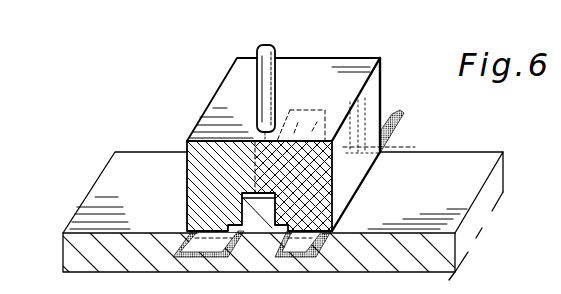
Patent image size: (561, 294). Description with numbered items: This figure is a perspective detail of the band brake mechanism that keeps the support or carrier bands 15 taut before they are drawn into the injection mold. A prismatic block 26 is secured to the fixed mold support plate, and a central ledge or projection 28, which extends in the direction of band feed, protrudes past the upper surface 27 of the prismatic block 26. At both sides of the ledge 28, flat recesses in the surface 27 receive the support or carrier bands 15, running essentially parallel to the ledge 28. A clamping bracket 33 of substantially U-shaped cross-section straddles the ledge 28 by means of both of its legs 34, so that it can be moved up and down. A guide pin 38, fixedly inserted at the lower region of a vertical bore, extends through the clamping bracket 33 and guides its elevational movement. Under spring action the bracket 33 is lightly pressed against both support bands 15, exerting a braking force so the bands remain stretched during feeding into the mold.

The support or carrier band 15 is at (184, 233).
The prismatic block 26 is at (482, 204).
The upper surface of the prismatic block 27 is at (437, 163).
The central ledge or projection 28 is at (257, 215).
The clamping bracket 33 is at (229, 79).
The legs of the clamping bracket 34 is at (218, 202).
The guide pin 38 is at (266, 98).